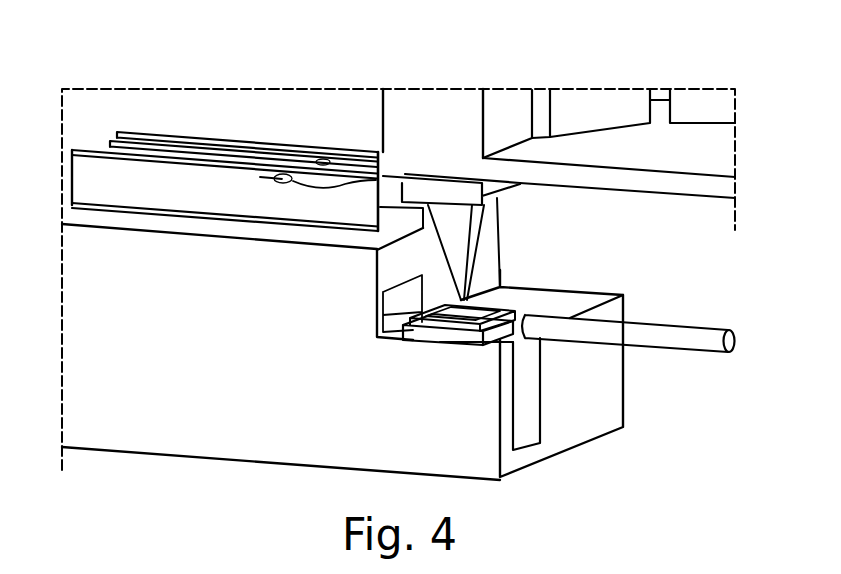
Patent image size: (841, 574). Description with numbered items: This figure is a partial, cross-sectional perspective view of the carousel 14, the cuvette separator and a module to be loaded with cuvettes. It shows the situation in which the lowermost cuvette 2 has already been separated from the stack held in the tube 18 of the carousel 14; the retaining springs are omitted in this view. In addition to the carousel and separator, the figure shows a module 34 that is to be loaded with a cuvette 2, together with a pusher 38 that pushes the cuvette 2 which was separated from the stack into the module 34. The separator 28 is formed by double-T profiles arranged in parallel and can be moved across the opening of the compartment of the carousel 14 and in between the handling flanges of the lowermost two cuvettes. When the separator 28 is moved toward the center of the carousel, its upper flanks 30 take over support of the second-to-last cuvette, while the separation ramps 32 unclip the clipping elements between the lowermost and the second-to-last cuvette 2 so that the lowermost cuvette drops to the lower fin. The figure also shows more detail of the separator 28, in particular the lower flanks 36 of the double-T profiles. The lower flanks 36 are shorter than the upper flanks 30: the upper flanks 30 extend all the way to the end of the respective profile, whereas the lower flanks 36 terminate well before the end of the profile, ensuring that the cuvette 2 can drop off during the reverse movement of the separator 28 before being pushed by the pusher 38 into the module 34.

The cuvette 2 is at (478, 222).
The carousel 14 is at (653, 152).
The tube 18 is at (430, 112).
The separator 28 is at (90, 170).
The upper flanks 30 is at (343, 182).
The separation ramps 32 is at (300, 178).
The module 34 is at (203, 413).
The lower flanks 36 is at (281, 220).
The pusher 38 is at (653, 337).